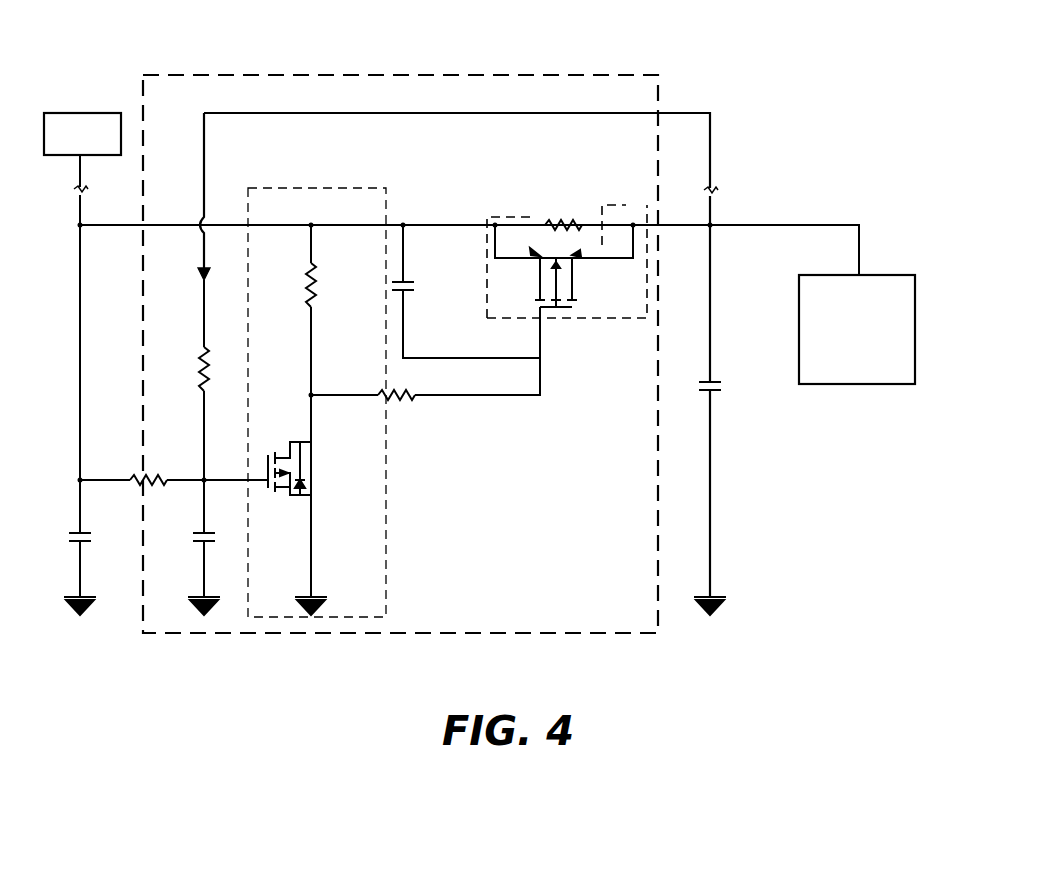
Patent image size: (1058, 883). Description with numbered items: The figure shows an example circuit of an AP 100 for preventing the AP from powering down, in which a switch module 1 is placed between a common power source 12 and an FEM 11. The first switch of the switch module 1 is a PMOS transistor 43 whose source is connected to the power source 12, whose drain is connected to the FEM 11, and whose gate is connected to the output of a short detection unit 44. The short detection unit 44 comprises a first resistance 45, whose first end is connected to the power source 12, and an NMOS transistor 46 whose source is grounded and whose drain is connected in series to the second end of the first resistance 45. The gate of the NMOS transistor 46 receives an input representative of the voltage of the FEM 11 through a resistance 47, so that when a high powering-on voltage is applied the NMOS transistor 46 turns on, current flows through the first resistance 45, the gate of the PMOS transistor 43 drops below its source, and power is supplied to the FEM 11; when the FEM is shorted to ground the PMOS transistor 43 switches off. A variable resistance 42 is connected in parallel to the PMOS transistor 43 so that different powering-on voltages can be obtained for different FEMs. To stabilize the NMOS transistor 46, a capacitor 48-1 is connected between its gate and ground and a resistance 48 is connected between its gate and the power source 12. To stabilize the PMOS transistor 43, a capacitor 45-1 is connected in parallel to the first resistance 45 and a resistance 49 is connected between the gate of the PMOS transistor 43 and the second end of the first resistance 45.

The AP 100 is at (383, 34).
The switch module 1 is at (510, 74).
The common power source 12 is at (66, 112).
The FEM 11 is at (892, 274).
The resistance 42 is at (557, 222).
The PMOS transistor 43 is at (621, 206).
The short detection unit 44 is at (389, 522).
The first resistance 45 is at (316, 281).
The capacitor 45-1 is at (408, 284).
The NMOS transistor 46 is at (306, 471).
The resistance 47 is at (201, 364).
The resistance 48 is at (140, 477).
The capacitor 48-1 is at (198, 537).
The resistance 49 is at (406, 392).